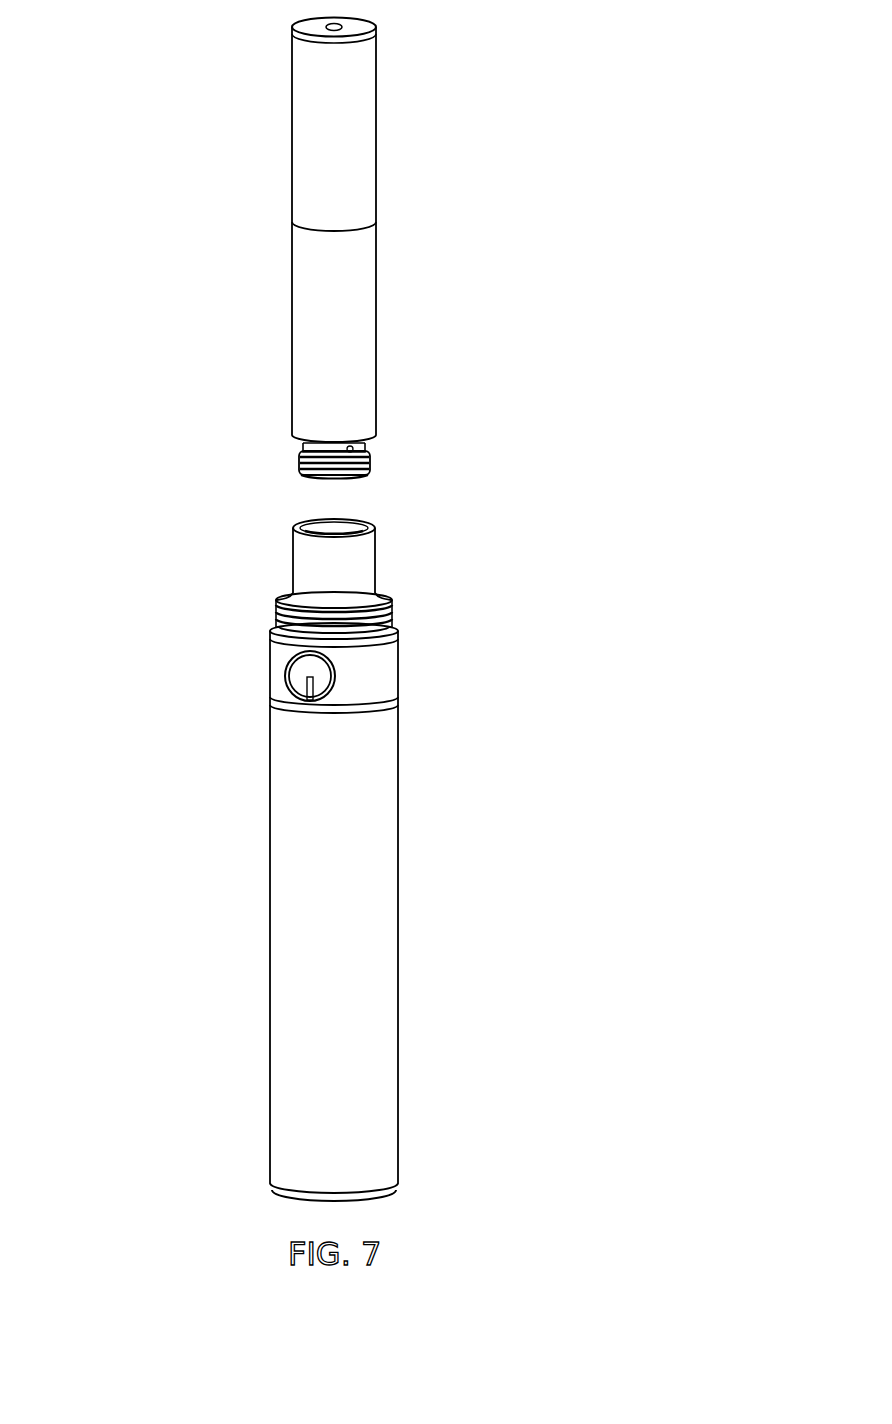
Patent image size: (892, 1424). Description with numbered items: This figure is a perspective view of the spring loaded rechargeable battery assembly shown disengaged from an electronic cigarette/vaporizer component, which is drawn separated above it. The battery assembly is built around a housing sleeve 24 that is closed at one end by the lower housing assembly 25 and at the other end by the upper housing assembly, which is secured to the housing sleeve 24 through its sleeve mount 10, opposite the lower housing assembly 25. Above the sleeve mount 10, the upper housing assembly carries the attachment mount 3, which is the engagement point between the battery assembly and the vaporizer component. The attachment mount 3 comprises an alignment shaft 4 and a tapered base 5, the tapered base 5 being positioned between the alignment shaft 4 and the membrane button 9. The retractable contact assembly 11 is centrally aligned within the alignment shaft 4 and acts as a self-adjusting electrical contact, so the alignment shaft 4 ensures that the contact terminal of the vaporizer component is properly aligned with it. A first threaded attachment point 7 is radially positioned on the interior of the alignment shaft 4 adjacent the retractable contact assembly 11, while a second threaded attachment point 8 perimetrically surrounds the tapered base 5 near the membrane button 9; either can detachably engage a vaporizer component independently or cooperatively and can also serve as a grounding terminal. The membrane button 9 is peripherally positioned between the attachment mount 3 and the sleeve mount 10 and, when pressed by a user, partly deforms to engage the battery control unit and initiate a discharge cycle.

The attachment mount 3 is at (402, 563).
The alignment shaft 4 is at (345, 584).
The tapered base 5 is at (290, 598).
The first threaded attachment point 7 is at (320, 537).
The second threaded attachment point 8 is at (385, 612).
The membrane button 9 is at (286, 672).
The sleeve mount 10 is at (395, 705).
The retractable contact assembly 11 is at (343, 532).
The housing sleeve 24 is at (351, 965).
The lower housing assembly 25 is at (252, 1184).